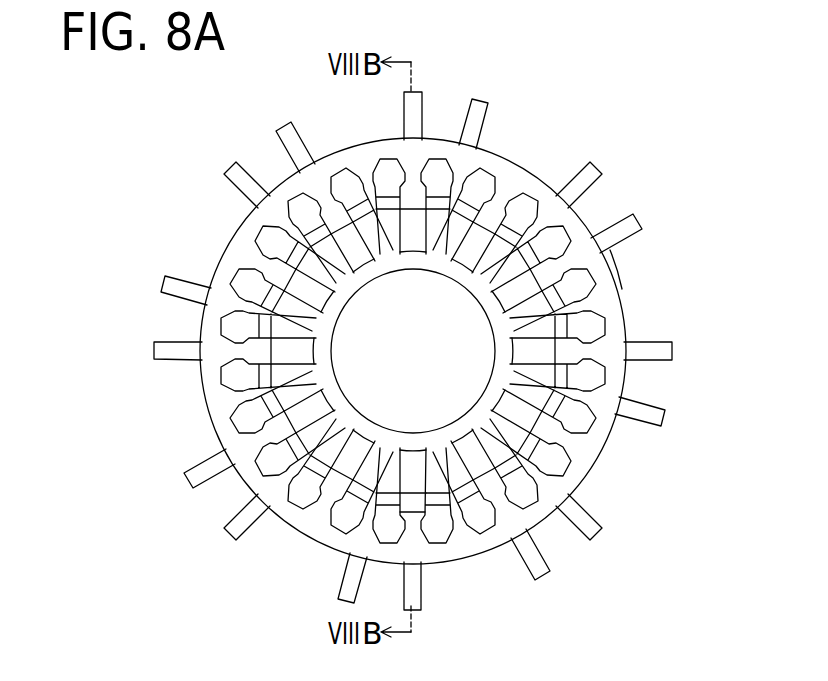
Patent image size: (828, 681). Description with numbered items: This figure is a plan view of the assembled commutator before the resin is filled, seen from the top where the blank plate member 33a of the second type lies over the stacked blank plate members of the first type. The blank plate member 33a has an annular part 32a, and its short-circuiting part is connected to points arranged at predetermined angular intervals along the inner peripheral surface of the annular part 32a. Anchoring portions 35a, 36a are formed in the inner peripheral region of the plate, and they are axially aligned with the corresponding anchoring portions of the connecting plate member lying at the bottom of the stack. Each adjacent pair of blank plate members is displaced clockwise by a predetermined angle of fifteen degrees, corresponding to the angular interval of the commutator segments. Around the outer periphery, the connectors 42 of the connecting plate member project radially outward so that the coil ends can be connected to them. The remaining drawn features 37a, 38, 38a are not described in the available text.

The annular part 32a is at (444, 553).
The blank plate member of second type 33a is at (621, 272).
The anchoring portion 35a is at (500, 203).
The anchoring portion 36a is at (437, 158).
The central bore 37a is at (494, 326).
The inner ring 38 is at (346, 272).
The slot 38a is at (417, 238).
The connector 42 is at (628, 240).